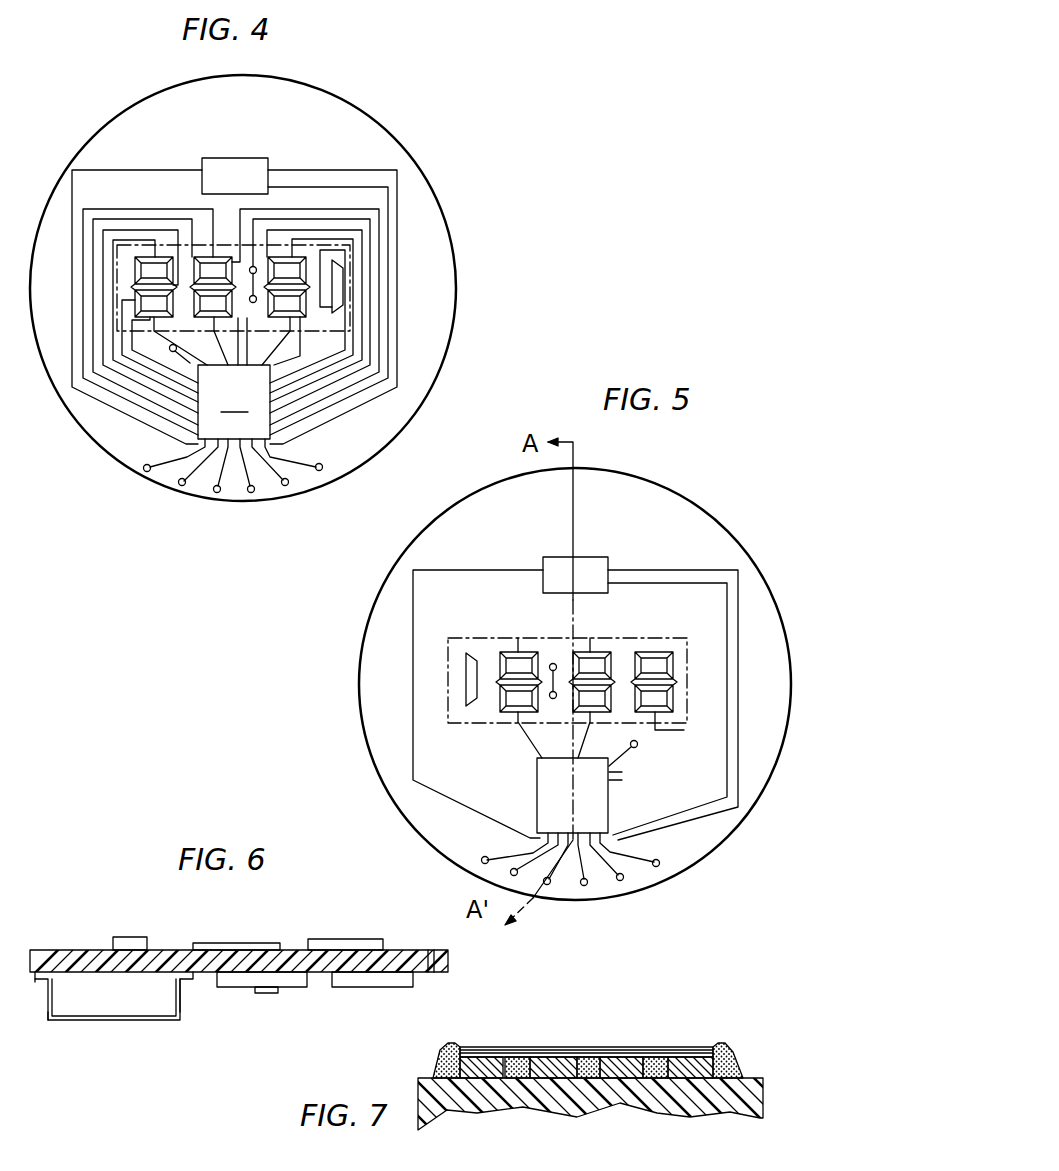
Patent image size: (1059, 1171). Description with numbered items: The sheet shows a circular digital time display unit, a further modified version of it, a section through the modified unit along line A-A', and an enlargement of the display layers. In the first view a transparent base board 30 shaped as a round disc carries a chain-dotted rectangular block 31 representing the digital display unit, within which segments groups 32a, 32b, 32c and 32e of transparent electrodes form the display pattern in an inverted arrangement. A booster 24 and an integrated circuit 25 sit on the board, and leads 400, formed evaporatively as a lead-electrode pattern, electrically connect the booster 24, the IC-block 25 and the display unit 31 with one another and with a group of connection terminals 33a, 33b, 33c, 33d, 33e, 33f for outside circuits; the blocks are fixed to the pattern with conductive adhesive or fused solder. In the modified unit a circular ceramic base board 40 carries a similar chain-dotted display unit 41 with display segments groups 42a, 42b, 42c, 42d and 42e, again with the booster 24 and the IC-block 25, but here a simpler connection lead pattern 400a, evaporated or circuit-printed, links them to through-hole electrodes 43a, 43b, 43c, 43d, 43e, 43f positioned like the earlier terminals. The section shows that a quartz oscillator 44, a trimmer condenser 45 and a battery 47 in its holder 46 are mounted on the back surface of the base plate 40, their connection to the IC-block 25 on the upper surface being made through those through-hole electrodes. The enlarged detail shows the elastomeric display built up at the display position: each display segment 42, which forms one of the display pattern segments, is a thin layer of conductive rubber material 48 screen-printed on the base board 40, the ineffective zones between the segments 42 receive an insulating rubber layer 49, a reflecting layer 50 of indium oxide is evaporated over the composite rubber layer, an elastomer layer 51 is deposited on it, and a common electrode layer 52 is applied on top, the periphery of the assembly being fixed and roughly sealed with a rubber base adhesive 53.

In FIG. 4, the booster 24 is at (248, 162).
In FIG. 5, the booster 24 is at (600, 566).
In FIG. 6, the booster 24 is at (130, 940).
In FIG. 4, the integrated circuit 25 is at (234, 402).
In FIG. 5, the integrated circuit 25 is at (538, 796).
In FIG. 6, the integrated circuit 25 is at (343, 940).
In FIG. 4, the transparent base board 30 is at (352, 110).
In FIG. 4, the display unit 31 is at (353, 246).
In FIG. 4, the segments group 32a is at (340, 293).
In FIG. 4, the segments group 32b is at (154, 254).
In FIG. 4, the segments group 32c is at (210, 260).
In FIG. 4, the segments group 32e is at (257, 268).
In FIG. 4, the connection terminal 33a is at (322, 469).
In FIG. 4, the connection terminal 33b is at (288, 486).
In FIG. 4, the connection terminal 33c is at (252, 493).
In FIG. 4, the connection terminal 33d is at (217, 493).
In FIG. 4, the connection terminal 33e is at (180, 486).
In FIG. 4, the connection terminal 33f is at (145, 471).
In FIG. 4, the leads 400 is at (398, 358).
In FIG. 5, the circular base board 40 is at (652, 499).
In FIG. 6, the circular base board 40 is at (68, 948).
In FIG. 7, the circular base board 40 is at (750, 1106).
In FIG. 5, the display unit 41 is at (664, 652).
In FIG. 6, the display unit 41 is at (240, 944).
In FIG. 7, the display unit 41 is at (683, 1045).
In FIG. 7, the transparent electrode 42 is at (488, 1078).
In FIG. 5, the display segments group 42a is at (470, 668).
In FIG. 5, the display segments group 42b is at (516, 660).
In FIG. 5, the display segments group 42c is at (592, 662).
In FIG. 5, the display segments group 42d is at (655, 702).
In FIG. 5, the display segments group 42e is at (552, 660).
In FIG. 5, the through-hole electrode 43a is at (658, 866).
In FIG. 5, the through-hole electrode 43b is at (622, 880).
In FIG. 5, the through-hole electrode 43c is at (586, 887).
In FIG. 5, the through-hole electrode 43d is at (547, 885).
In FIG. 6, the through-hole electrode 43d is at (430, 950).
In FIG. 5, the through-hole electrode 43e is at (510, 873).
In FIG. 5, the through-hole electrode 43f is at (482, 857).
In FIG. 5, the connection lead pattern 400a is at (412, 747).
In FIG. 6, the quartz oscillator 44 is at (358, 987).
In FIG. 6, the trimmer condenser 45 is at (250, 987).
In FIG. 6, the battery holder 46 is at (37, 1000).
In FIG. 6, the battery 47 is at (126, 1016).
In FIG. 7, the conductive rubber material 48 is at (518, 1078).
In FIG. 7, the insulating rubber layer 49 is at (484, 1052).
In FIG. 7, the reflecting layer 50 is at (489, 1052).
In FIG. 7, the elastomer layer 51 is at (592, 1050).
In FIG. 7, the common electrode layer 52 is at (647, 1050).
In FIG. 7, the rubber base adhesive 53 is at (438, 1066).